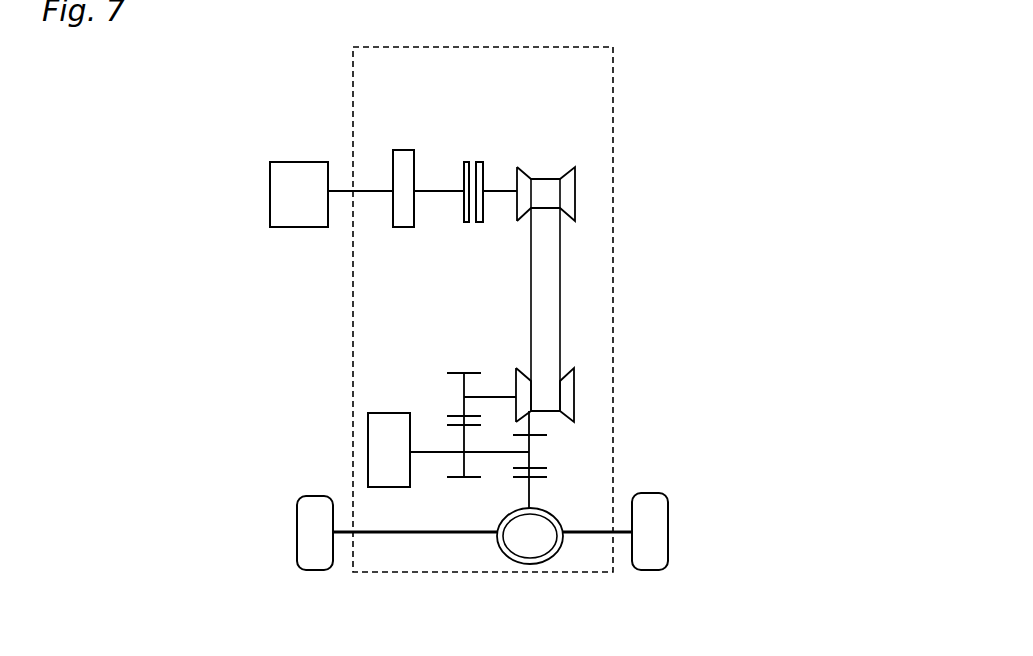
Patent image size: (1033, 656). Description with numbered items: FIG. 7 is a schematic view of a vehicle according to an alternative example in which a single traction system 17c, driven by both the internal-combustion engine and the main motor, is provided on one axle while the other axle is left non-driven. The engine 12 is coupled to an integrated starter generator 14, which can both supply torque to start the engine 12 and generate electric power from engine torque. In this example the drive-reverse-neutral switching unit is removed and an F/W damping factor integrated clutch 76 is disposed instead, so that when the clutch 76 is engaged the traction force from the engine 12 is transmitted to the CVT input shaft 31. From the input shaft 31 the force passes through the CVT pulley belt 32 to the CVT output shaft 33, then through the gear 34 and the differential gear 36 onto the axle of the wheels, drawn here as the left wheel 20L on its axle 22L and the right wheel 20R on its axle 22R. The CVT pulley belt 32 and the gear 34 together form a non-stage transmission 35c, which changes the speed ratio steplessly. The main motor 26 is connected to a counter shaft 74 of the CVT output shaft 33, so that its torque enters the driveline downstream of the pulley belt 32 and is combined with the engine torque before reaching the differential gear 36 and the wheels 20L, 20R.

The traction system 17c is at (634, 68).
The engine 12 is at (299, 162).
The integrated starter generator 14 is at (403, 150).
The F/W damping factor integrated clutch 76 is at (473, 162).
The CVT input shaft 31 is at (500, 191).
The CVT pulley belt 32 is at (553, 197).
The non-stage transmission 35c is at (588, 294).
The CVT output shaft 33 is at (496, 397).
The gear 34 is at (426, 355).
The main motor 26 is at (368, 437).
The counter shaft 74 is at (431, 455).
The differential gear 36 is at (527, 566).
The left drive wheel 20L is at (273, 511).
The left axle 22L is at (306, 496).
The right drive wheel 20R is at (687, 506).
The right axle 22R is at (650, 493).